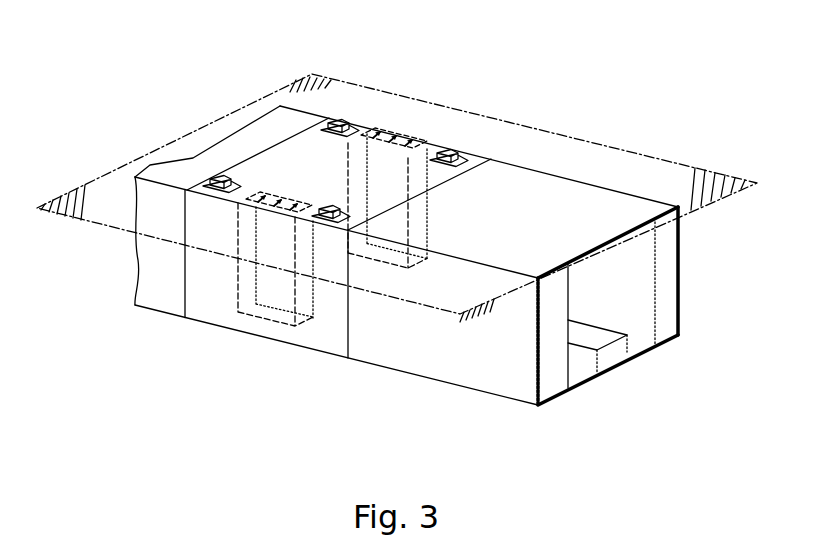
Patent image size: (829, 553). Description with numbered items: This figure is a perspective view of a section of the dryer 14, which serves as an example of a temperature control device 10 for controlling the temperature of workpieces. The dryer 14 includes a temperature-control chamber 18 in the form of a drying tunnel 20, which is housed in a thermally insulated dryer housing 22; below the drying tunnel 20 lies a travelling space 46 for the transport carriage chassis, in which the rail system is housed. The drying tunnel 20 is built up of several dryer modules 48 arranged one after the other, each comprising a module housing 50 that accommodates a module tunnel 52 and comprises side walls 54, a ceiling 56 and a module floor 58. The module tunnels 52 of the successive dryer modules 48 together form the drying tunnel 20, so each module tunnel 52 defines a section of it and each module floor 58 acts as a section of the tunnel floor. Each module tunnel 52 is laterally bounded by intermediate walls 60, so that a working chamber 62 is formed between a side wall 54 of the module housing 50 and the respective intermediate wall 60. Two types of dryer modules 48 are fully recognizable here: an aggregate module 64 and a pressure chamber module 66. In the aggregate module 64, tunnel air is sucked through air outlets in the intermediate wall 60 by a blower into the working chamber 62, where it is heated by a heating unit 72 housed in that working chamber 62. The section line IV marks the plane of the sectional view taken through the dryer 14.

The temperature control device 10 is at (513, 69).
The dryer 14 is at (584, 71).
The temperature-control chamber 18 is at (645, 282).
The drying tunnel 20 is at (637, 312).
The dryer housing 22 is at (445, 365).
The travelling space 46 is at (648, 356).
The dryer modules 48 is at (203, 305).
The module housing 50 is at (400, 350).
The module tunnel 52 is at (617, 278).
The side walls 54 is at (680, 318).
The ceiling 56 is at (518, 190).
The module floor 58 is at (625, 342).
The intermediate walls 60 is at (657, 252).
The working chamber 62 is at (670, 335).
The aggregate module 64 is at (285, 160).
The pressure chamber module 66 is at (587, 207).
The heating unit 72 is at (265, 295).
The section line IV is at (397, 106).